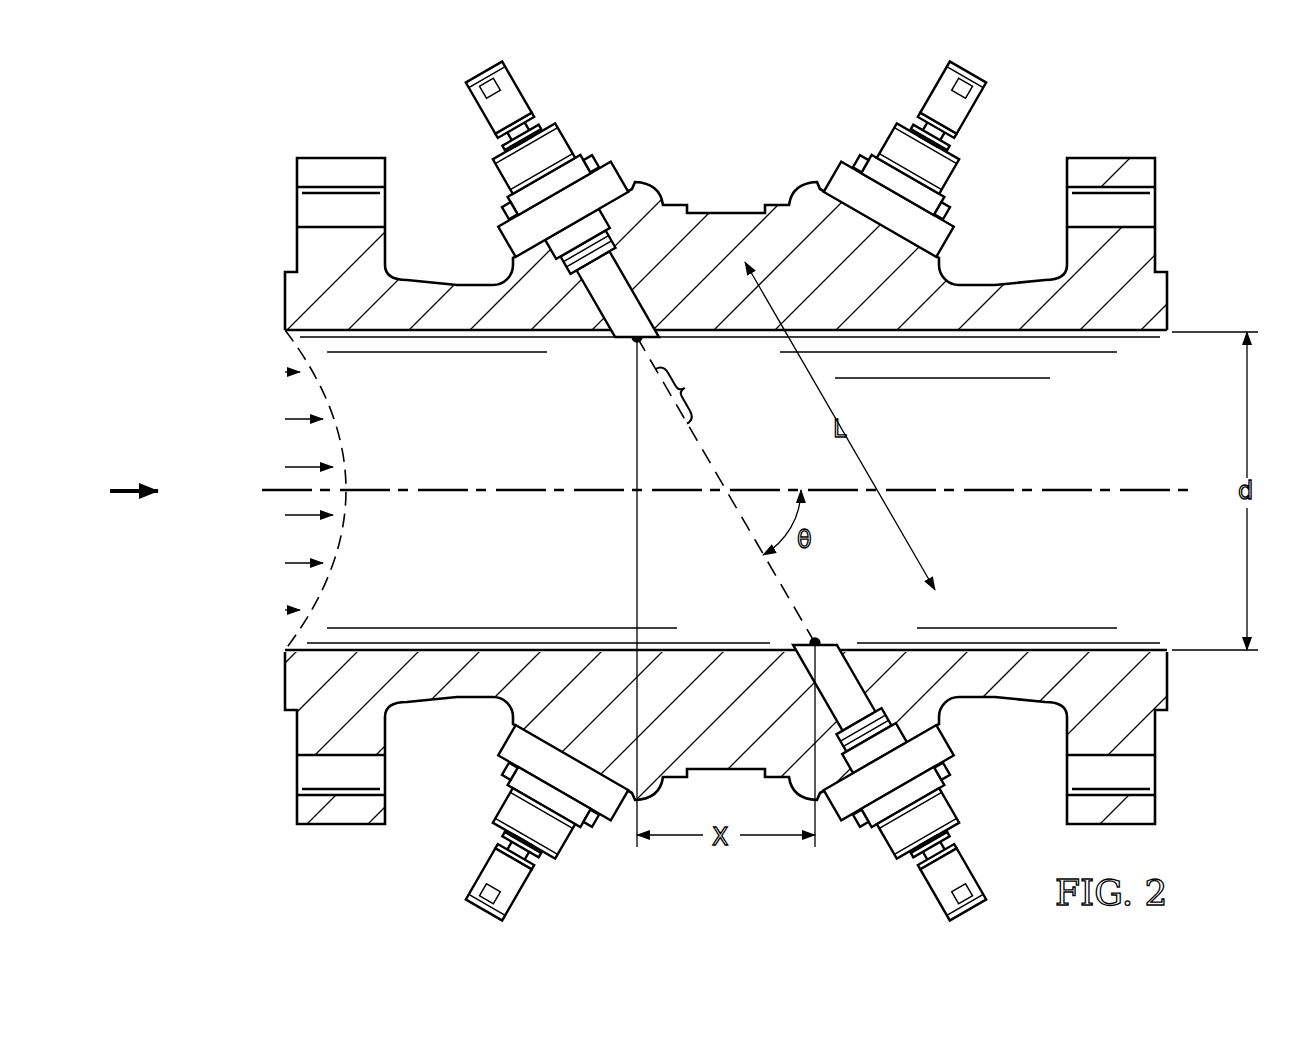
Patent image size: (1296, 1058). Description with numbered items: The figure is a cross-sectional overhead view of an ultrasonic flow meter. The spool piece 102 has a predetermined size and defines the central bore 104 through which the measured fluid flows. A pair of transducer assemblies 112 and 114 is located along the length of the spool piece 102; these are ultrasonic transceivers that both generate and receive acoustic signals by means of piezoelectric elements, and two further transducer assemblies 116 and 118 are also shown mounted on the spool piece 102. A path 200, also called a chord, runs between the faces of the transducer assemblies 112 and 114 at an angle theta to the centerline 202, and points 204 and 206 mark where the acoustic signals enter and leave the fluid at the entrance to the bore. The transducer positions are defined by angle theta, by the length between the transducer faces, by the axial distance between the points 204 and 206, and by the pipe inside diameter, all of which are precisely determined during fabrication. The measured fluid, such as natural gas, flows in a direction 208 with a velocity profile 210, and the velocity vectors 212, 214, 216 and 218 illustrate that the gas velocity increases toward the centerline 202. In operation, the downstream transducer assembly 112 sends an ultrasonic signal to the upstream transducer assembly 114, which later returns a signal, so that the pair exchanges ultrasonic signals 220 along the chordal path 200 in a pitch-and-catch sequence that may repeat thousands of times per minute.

The spool piece 102 is at (733, 213).
The central bore 104 is at (998, 443).
The transducer assembly 112 is at (935, 897).
The transducer assembly 114 is at (565, 137).
The ultrasonic transducer 116 is at (517, 896).
The ultrasonic transducer 118 is at (932, 88).
The path 200 is at (778, 590).
The centerline 202 is at (1018, 492).
The point 204 is at (820, 640).
The point 206 is at (630, 345).
The direction 208 is at (128, 487).
The velocity profile 210 is at (341, 438).
The velocity vector 212 is at (285, 408).
The velocity vector 214 is at (285, 455).
The velocity vector 216 is at (285, 530).
The velocity vector 218 is at (285, 580).
The ultrasonic signals 220 is at (685, 388).